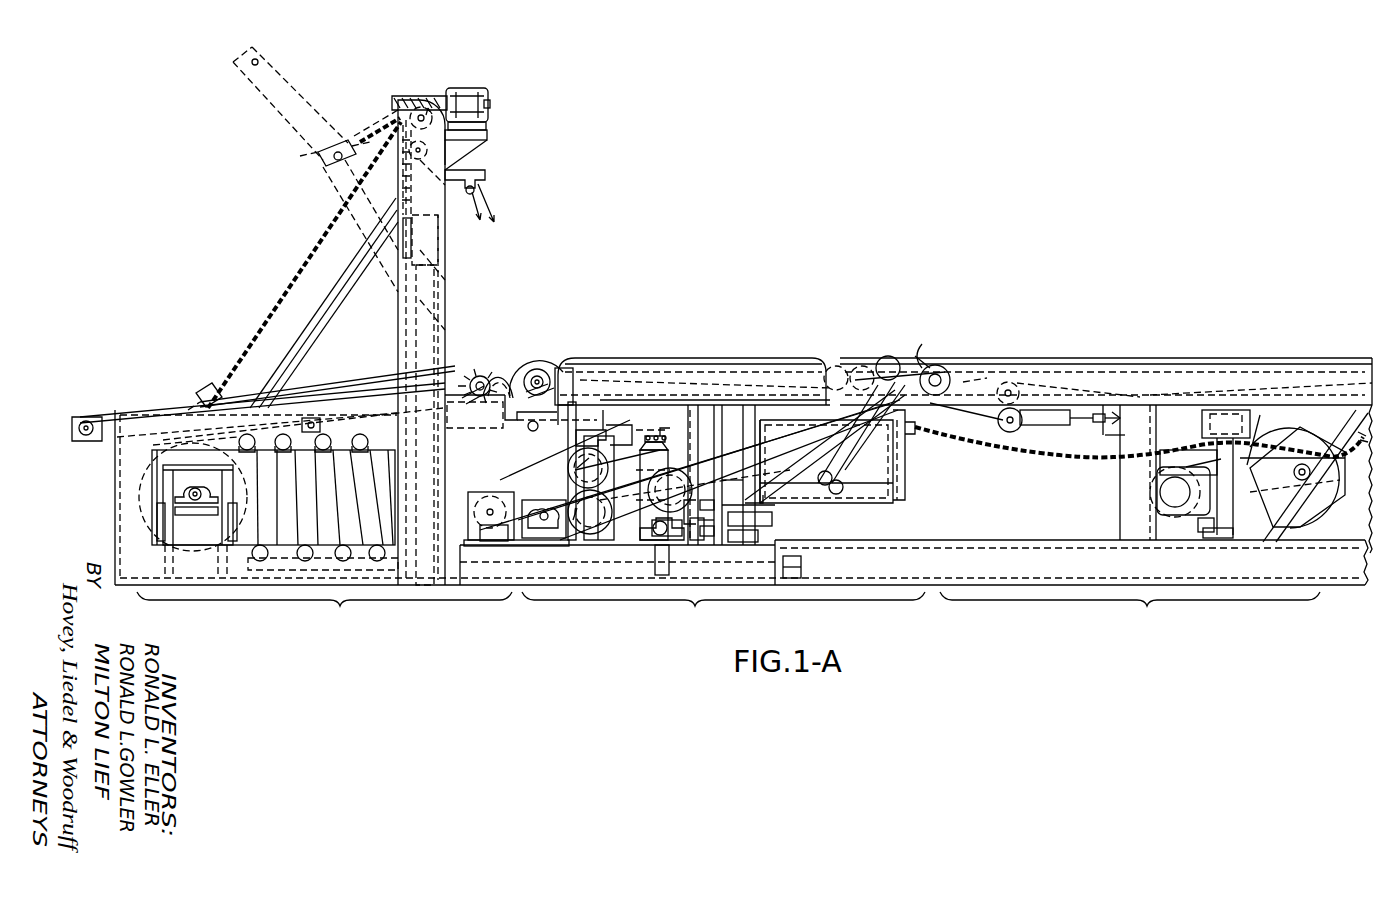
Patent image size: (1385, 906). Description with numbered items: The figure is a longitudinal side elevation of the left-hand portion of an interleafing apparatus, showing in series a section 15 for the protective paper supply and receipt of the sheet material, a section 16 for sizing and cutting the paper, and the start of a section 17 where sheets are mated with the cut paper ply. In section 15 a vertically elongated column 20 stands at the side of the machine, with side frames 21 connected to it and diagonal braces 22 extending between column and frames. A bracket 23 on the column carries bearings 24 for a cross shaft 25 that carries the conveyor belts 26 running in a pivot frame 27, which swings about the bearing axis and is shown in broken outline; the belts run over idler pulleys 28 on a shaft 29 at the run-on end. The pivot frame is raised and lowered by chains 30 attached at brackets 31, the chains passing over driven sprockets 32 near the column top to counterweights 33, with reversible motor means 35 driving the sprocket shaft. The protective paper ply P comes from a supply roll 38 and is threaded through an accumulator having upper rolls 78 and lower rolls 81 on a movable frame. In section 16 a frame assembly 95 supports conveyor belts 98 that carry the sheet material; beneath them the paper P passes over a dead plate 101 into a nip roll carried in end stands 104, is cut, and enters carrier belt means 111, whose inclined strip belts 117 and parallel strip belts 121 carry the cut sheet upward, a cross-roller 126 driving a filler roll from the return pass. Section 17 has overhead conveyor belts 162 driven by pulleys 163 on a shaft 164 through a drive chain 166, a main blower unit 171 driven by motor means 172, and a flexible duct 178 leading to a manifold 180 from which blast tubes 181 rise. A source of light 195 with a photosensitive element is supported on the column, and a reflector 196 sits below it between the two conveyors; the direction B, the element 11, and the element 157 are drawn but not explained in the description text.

The direction of travel arrows 11 is at (460, 462).
The section for protective paper supply and receipt of sheet material 15 is at (324, 615).
The section for sizing and cutting protective paper 16 is at (723, 615).
The section for mating sheets with cut paper ply 17 is at (1130, 615).
The vertically elongated column 20 is at (438, 314).
The side frame 21 is at (342, 410).
The diagonal brace 22 is at (348, 314).
The bracket 23 is at (475, 415).
The bearing 24 is at (488, 386).
The cross shaft 25 is at (481, 374).
The conveyor belt 26 is at (308, 383).
The pivot frame 27 is at (60, 418).
The idler pulley 28 is at (94, 410).
The shaft 29 is at (84, 434).
The chain 30 is at (296, 264).
The bracket 31 is at (202, 394).
The driven sprocket 32 is at (438, 96).
The counterweight 33 is at (446, 244).
The reversible motor means 35 is at (488, 106).
The supply roll 38 is at (136, 499).
The roll 78 is at (302, 404).
The roll 81 is at (323, 562).
The frame assembly 95 is at (714, 371).
The conveyor belt 98 is at (660, 360).
The dead plate 101 is at (510, 481).
The end stand 104 is at (632, 444).
The carrier belt means 111 is at (786, 519).
The strip belt 117 is at (836, 454).
The strip belt 121 is at (778, 454).
The cross-roller 126 is at (832, 482).
The pump 157 is at (658, 440).
The conveyor belt 162 is at (1094, 358).
The pulley 163 is at (974, 364).
The shaft 164 is at (934, 364).
The drive chain 166 is at (558, 375).
The main blower unit 171 is at (1288, 430).
The motor means 172 is at (1141, 490).
The flexible duct 178 is at (1050, 470).
The manifold 180 is at (901, 446).
The blast tube 181 is at (878, 362).
The source of light 195 is at (490, 180).
The reflector 196 is at (526, 366).
The direction B is at (502, 295).
The protective paper ply P is at (394, 508).